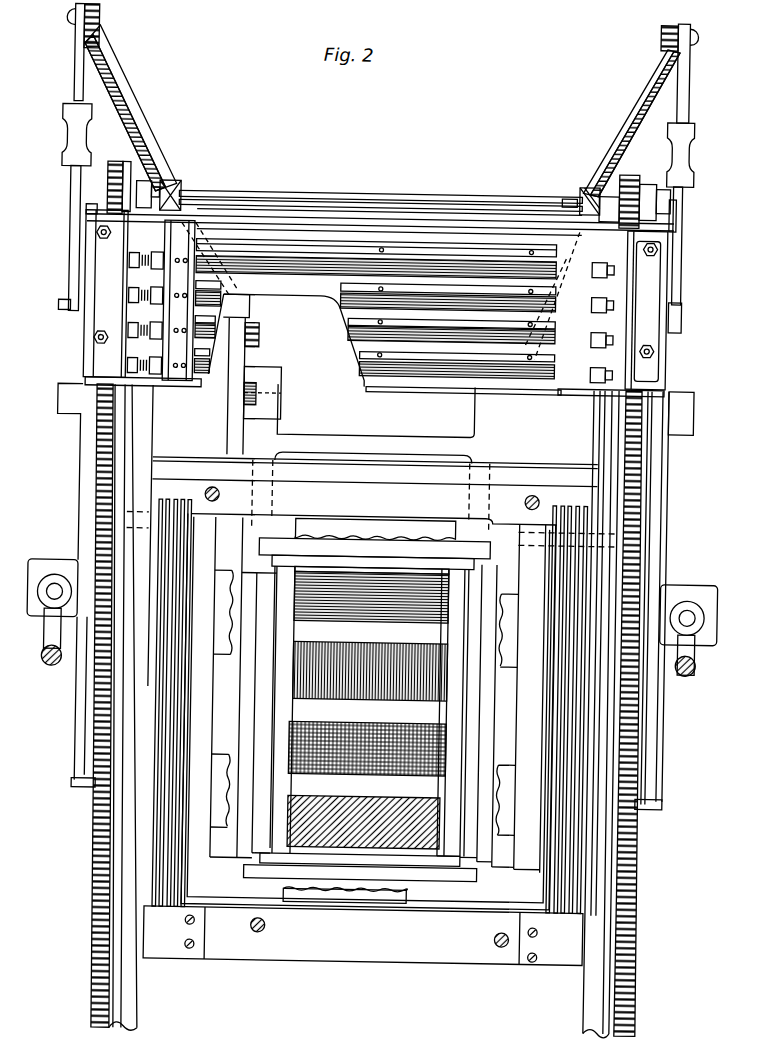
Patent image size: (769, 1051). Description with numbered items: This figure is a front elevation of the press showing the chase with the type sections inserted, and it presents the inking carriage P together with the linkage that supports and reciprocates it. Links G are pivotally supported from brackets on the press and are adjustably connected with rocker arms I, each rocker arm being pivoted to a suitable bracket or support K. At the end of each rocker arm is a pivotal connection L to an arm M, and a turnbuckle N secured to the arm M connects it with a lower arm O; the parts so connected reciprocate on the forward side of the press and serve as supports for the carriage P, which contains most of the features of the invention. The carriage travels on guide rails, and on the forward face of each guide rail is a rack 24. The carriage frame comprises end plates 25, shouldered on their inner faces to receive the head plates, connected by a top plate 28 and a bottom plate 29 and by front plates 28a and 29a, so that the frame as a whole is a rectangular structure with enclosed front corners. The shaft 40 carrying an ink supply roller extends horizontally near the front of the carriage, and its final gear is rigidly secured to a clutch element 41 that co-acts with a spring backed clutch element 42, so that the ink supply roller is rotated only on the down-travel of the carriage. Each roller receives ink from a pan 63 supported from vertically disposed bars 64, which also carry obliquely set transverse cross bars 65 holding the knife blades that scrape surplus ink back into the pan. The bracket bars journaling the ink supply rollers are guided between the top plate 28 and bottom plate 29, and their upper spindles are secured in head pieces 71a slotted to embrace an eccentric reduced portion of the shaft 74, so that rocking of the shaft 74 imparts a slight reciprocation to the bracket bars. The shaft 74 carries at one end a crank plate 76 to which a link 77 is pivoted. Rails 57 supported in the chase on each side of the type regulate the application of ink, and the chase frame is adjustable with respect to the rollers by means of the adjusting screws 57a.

The pivotal connection L is at (60, 24).
The arm M is at (70, 63).
The turnbuckle N is at (70, 133).
The lower arm O is at (65, 219).
The rocker arm I is at (136, 120).
The head piece 71a is at (160, 186).
The spring backed clutch element 42 is at (121, 263).
The carriage P is at (423, 192).
The shaft 74 is at (464, 202).
The shaft 40 is at (200, 246).
The vertically disposed bars 64 is at (296, 209).
The transverse cross bars 65 is at (352, 213).
The pan 63 is at (440, 335).
The link 77 is at (661, 182).
The crank plate 76 is at (655, 188).
The clutch element 41 is at (140, 259).
The top plate 28 is at (90, 216).
The front plate 28a is at (126, 312).
The end plate 25 is at (82, 324).
The front plate 29a is at (621, 323).
The bracket or support K is at (254, 357).
The link G is at (240, 426).
The bottom plate 29 is at (93, 393).
The rack 24 is at (96, 483).
The rail 57 is at (186, 650).
The adjusting screw 57a is at (504, 940).